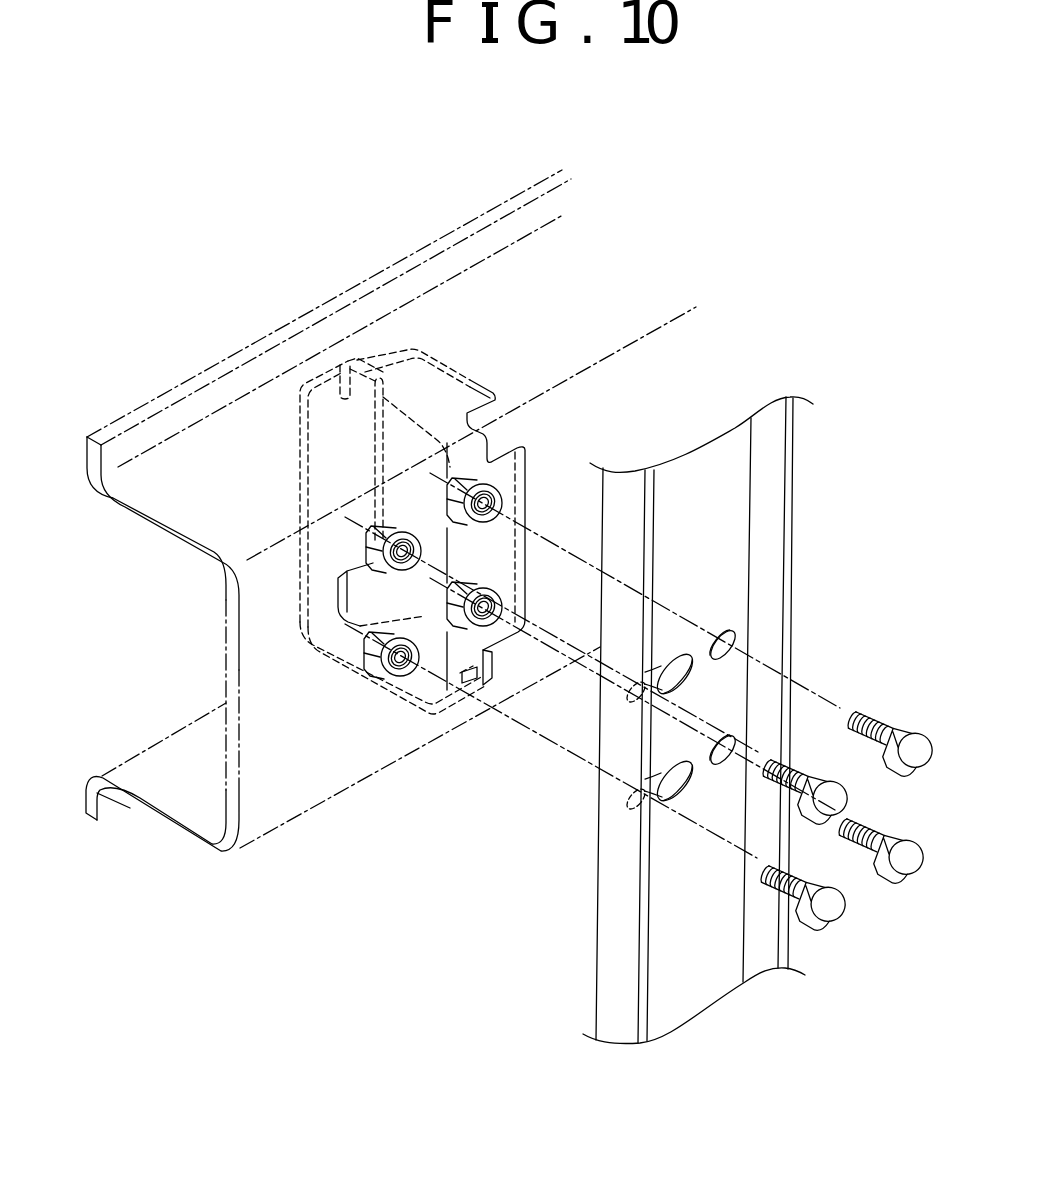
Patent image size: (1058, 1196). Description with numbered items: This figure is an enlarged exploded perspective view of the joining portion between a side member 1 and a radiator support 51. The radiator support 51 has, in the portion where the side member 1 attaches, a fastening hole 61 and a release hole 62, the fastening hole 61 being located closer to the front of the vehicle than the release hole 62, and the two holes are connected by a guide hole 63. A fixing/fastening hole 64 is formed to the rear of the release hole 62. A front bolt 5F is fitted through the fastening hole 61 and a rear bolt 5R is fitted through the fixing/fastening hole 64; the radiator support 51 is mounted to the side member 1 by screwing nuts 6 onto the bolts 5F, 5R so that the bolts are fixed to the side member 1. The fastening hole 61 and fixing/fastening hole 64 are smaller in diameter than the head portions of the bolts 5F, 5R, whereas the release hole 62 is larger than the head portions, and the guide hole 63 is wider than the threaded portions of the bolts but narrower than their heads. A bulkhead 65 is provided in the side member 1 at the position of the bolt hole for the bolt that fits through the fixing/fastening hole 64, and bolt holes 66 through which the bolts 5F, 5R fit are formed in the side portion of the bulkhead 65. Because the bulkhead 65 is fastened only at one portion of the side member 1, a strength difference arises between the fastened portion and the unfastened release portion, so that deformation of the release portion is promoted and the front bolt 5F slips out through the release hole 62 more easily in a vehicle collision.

The side member 1 is at (278, 787).
The rear bolt 5R is at (920, 730).
The front bolt 5F is at (852, 800).
The nut 6 is at (512, 494).
The radiator support 51 is at (770, 483).
The fastening hole 61 is at (633, 692).
The release hole 62 is at (688, 670).
The guide hole 63 is at (652, 672).
The fixing/fastening hole 64 is at (740, 640).
The bulkhead 65 is at (420, 690).
The bolt hole 66 is at (498, 512).